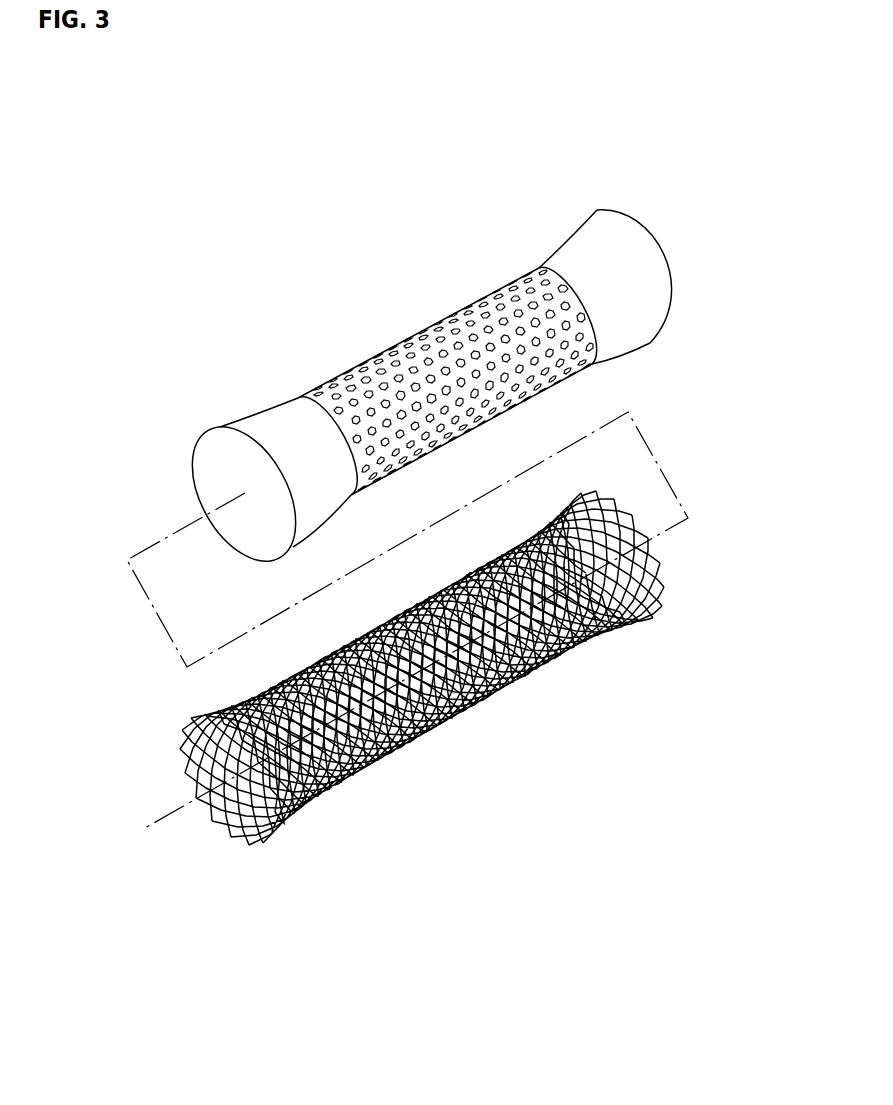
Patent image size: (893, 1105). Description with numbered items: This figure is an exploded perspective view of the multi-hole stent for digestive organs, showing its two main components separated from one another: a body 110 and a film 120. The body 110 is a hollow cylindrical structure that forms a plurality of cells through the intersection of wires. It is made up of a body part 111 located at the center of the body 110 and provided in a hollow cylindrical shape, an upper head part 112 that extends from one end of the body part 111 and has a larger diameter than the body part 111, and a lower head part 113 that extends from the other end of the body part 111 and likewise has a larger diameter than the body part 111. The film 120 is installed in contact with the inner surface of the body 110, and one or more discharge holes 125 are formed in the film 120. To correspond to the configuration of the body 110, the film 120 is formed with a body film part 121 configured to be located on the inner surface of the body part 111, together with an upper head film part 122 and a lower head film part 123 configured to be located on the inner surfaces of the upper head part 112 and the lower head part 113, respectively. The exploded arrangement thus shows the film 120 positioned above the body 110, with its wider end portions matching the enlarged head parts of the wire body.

The body 110 is at (433, 715).
The body part 111 is at (481, 705).
The upper head part 112 is at (272, 838).
The lower head part 113 is at (660, 600).
The film 120 is at (462, 340).
The body film part 121 is at (512, 303).
The upper head film part 122 is at (257, 428).
The lower head film part 123 is at (620, 242).
The discharge holes 125 is at (502, 278).